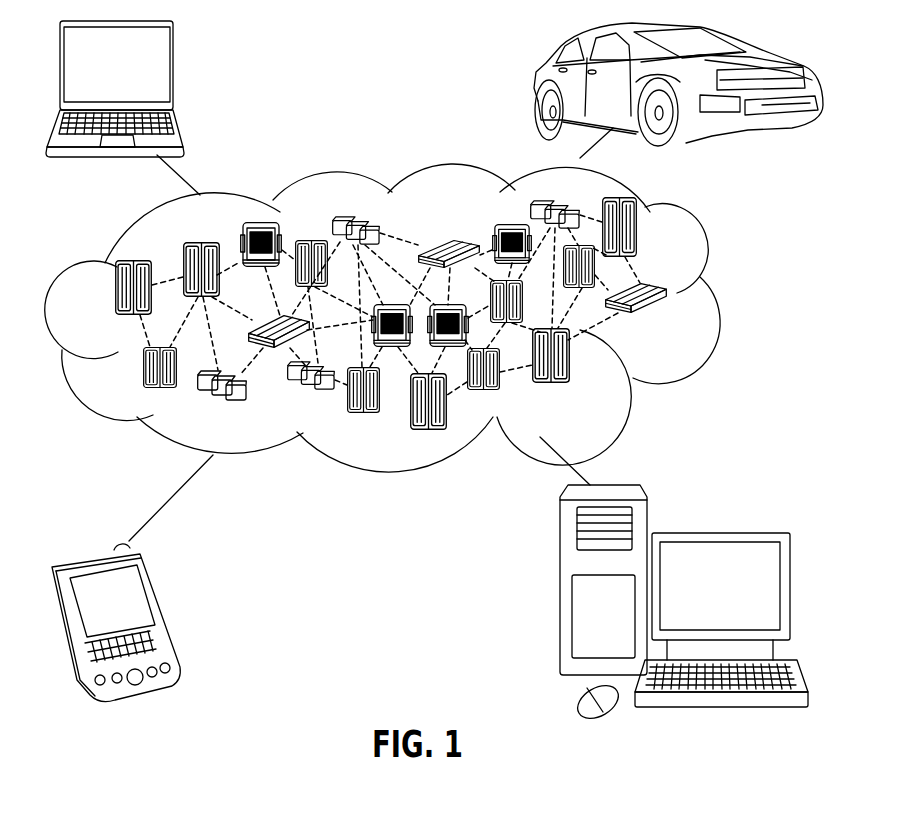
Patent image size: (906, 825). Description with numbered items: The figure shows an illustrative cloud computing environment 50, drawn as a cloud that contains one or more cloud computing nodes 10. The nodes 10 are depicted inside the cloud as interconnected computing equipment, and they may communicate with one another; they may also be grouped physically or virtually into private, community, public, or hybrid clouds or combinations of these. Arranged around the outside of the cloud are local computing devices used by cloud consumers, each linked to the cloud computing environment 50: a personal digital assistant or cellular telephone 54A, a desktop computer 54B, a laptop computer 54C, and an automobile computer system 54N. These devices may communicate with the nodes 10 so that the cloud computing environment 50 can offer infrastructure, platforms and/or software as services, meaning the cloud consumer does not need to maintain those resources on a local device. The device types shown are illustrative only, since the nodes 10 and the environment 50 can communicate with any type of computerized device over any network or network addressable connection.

The cloud computing node 10 is at (740, 287).
The cloud computing environment 50 is at (406, 318).
The personal digital assistant or cellular telephone 54A is at (165, 613).
The desktop computer 54B is at (718, 533).
The laptop computer 54C is at (173, 72).
The automobile computer system 54N is at (536, 86).